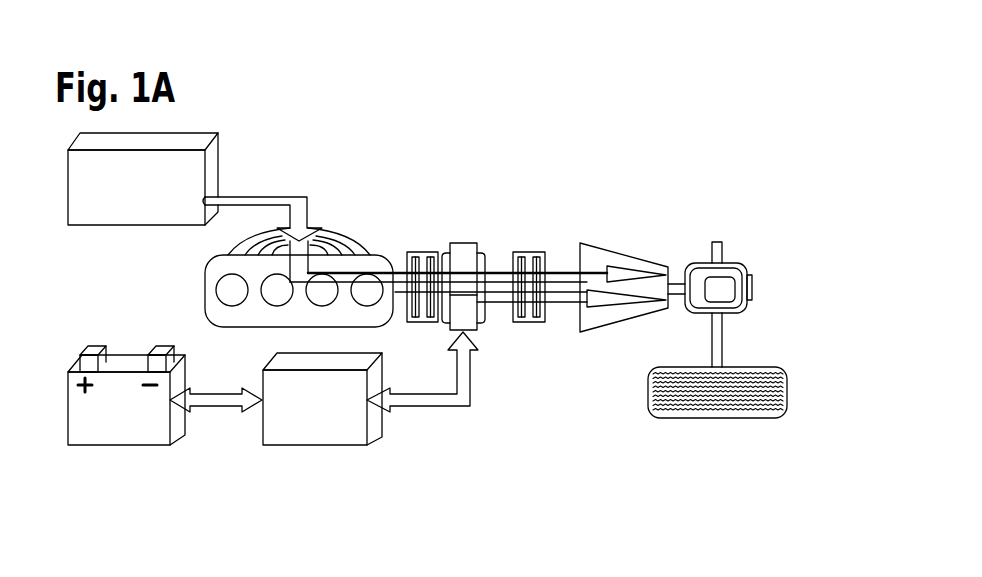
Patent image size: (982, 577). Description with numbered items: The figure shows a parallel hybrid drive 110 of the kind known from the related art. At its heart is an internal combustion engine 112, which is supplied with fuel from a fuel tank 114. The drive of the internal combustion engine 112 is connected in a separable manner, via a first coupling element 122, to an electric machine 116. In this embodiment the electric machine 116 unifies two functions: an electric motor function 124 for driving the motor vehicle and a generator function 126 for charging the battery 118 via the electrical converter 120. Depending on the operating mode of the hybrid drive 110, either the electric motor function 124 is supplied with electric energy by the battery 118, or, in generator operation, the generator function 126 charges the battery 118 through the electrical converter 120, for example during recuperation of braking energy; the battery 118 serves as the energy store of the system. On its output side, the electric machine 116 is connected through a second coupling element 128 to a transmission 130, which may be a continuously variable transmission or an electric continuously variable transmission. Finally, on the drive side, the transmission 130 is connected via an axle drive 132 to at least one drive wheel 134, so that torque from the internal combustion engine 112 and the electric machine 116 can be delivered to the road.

The hybrid drive 110 is at (710, 176).
The internal combustion engine 112 is at (225, 268).
The fuel tank 114 is at (216, 158).
The electric machine 116 is at (518, 241).
The battery 118 is at (92, 432).
The electrical converter 120 is at (327, 436).
The first coupling element 122 is at (423, 258).
The electric motor function 124 is at (446, 288).
The generator function 126 is at (466, 250).
The second coupling element 128 is at (527, 325).
The transmission 130 is at (626, 262).
The axle drive 132 is at (745, 270).
The drive wheel 134 is at (752, 377).